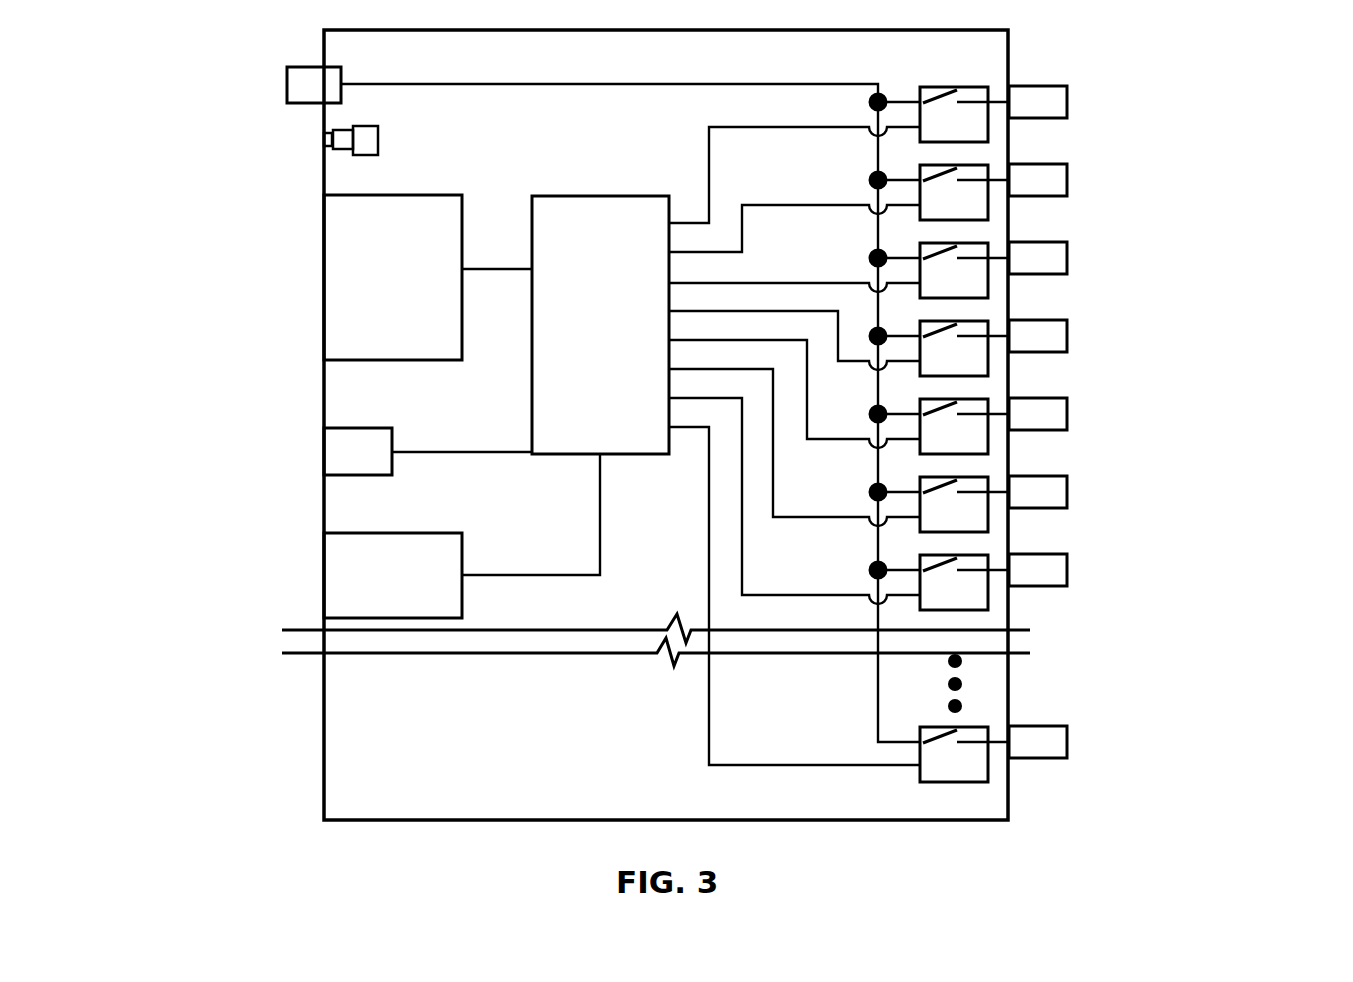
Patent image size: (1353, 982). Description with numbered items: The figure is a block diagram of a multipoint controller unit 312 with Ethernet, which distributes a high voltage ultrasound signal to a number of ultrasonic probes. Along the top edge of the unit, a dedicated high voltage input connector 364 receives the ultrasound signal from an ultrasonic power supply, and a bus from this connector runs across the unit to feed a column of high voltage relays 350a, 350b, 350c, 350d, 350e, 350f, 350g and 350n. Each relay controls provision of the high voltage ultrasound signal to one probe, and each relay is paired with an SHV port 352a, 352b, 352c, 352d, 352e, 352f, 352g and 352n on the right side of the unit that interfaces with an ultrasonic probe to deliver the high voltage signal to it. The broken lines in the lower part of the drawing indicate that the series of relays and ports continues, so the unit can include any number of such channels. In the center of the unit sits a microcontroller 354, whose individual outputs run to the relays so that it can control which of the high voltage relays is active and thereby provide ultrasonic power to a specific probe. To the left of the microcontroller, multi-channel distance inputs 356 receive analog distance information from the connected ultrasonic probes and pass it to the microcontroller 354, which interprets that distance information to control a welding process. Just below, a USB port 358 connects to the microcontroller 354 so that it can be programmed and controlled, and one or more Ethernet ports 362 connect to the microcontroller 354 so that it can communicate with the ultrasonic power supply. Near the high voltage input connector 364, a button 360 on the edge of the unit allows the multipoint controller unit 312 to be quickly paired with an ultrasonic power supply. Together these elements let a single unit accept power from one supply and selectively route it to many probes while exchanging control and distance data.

The multipoint controller unit 312 is at (1202, 157).
The high voltage relay 350a is at (983, 88).
The high voltage relay 350b is at (983, 166).
The high voltage relay 350c is at (983, 244).
The high voltage relay 350d is at (983, 322).
The high voltage relay 350e is at (983, 400).
The high voltage relay 350f is at (983, 478).
The high voltage relay 350g is at (983, 556).
The high voltage relay 350n is at (983, 728).
The SHV port 352a is at (1067, 103).
The SHV port 352b is at (1067, 181).
The SHV port 352c is at (1067, 259).
The SHV port 352d is at (1067, 337).
The SHV port 352e is at (1067, 415).
The SHV port 352f is at (1067, 493).
The SHV port 352g is at (1067, 571).
The SHV port 352n is at (1067, 743).
The microcontroller 354 is at (568, 196).
The multi-channel distance inputs 356 is at (345, 195).
The USB port 358 is at (345, 428).
The button 360 is at (314, 137).
The Ethernet port 362 is at (345, 533).
The high voltage input connector 364 is at (274, 80).